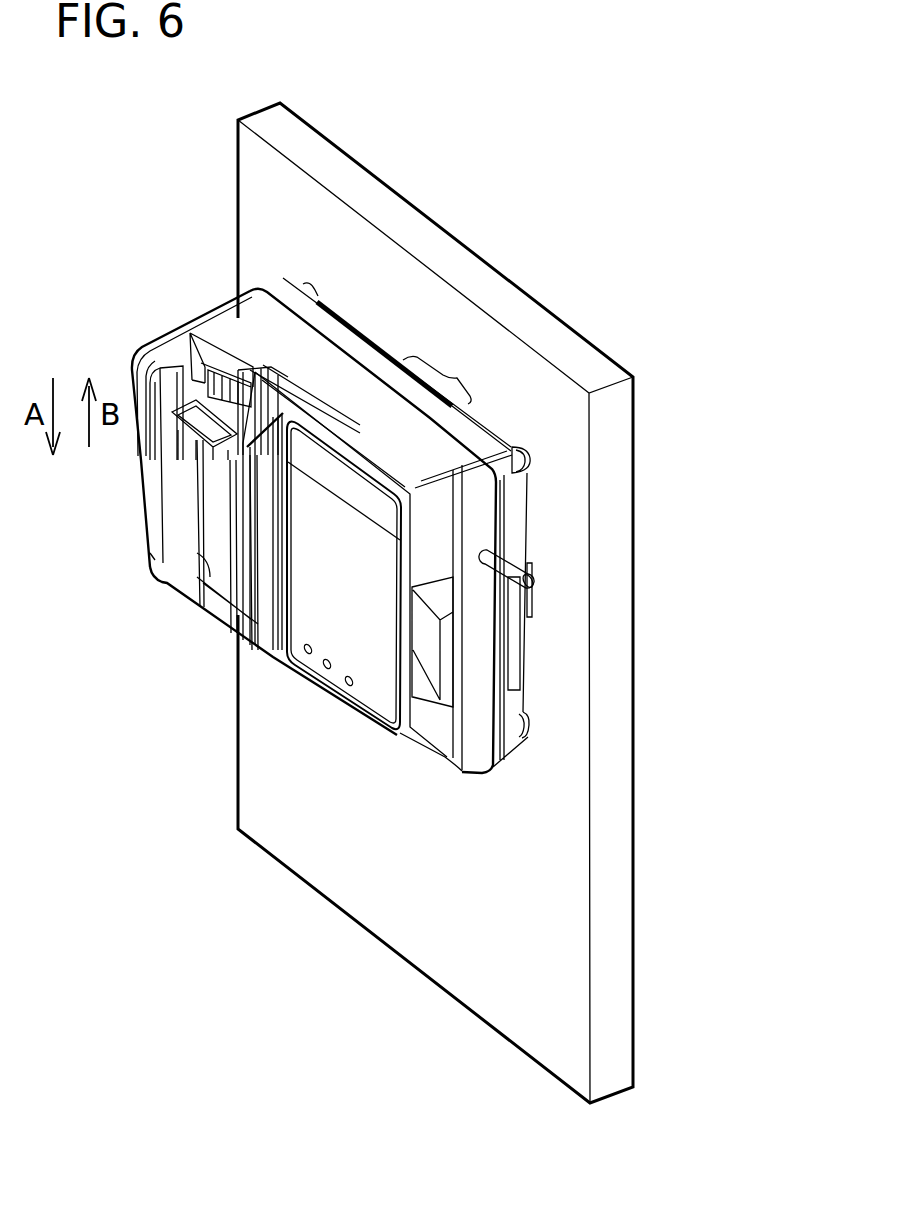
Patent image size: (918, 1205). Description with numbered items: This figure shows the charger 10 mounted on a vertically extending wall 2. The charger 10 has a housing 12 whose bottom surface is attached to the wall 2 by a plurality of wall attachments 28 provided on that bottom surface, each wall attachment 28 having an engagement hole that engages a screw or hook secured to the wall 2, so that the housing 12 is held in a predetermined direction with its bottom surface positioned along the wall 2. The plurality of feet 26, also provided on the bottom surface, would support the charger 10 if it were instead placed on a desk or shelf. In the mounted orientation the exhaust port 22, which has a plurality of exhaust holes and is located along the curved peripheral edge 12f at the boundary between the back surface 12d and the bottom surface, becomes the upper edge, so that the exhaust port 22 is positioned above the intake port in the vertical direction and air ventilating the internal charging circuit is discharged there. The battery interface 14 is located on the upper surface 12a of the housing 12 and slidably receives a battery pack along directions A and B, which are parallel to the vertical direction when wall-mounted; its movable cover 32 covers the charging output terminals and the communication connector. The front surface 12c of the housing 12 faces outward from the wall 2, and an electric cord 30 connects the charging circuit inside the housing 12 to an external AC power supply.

The wall 2 is at (413, 280).
The charger 10 is at (165, 257).
The housing 12 is at (222, 308).
The upper surface 12a is at (307, 623).
The front surface 12c is at (350, 712).
The back surface 12d is at (312, 350).
The peripheral edge 12f is at (497, 433).
The battery interface 14 is at (167, 372).
The exhaust port 22 is at (463, 402).
The feet 26 is at (532, 458).
The wall attachments 28 is at (535, 600).
The electric cord 30 is at (535, 570).
The movable cover 32 is at (183, 510).